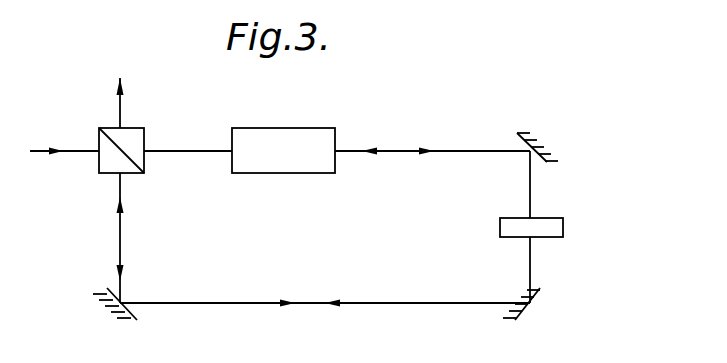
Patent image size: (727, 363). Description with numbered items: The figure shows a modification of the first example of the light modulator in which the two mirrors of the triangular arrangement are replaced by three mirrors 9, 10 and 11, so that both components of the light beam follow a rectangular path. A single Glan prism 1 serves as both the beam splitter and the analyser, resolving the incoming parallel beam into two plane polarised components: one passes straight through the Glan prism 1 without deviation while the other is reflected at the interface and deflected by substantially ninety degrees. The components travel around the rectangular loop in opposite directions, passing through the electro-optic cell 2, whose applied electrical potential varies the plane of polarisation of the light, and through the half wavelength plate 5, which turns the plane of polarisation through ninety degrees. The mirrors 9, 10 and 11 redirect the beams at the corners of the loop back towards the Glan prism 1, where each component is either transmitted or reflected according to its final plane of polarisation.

The Glan prism 1 is at (136, 136).
The electro-optic cell 2 is at (331, 137).
The half wavelength plate 5 is at (560, 226).
The mirror 9 is at (545, 146).
The mirror 10 is at (548, 300).
The mirror 11 is at (113, 320).